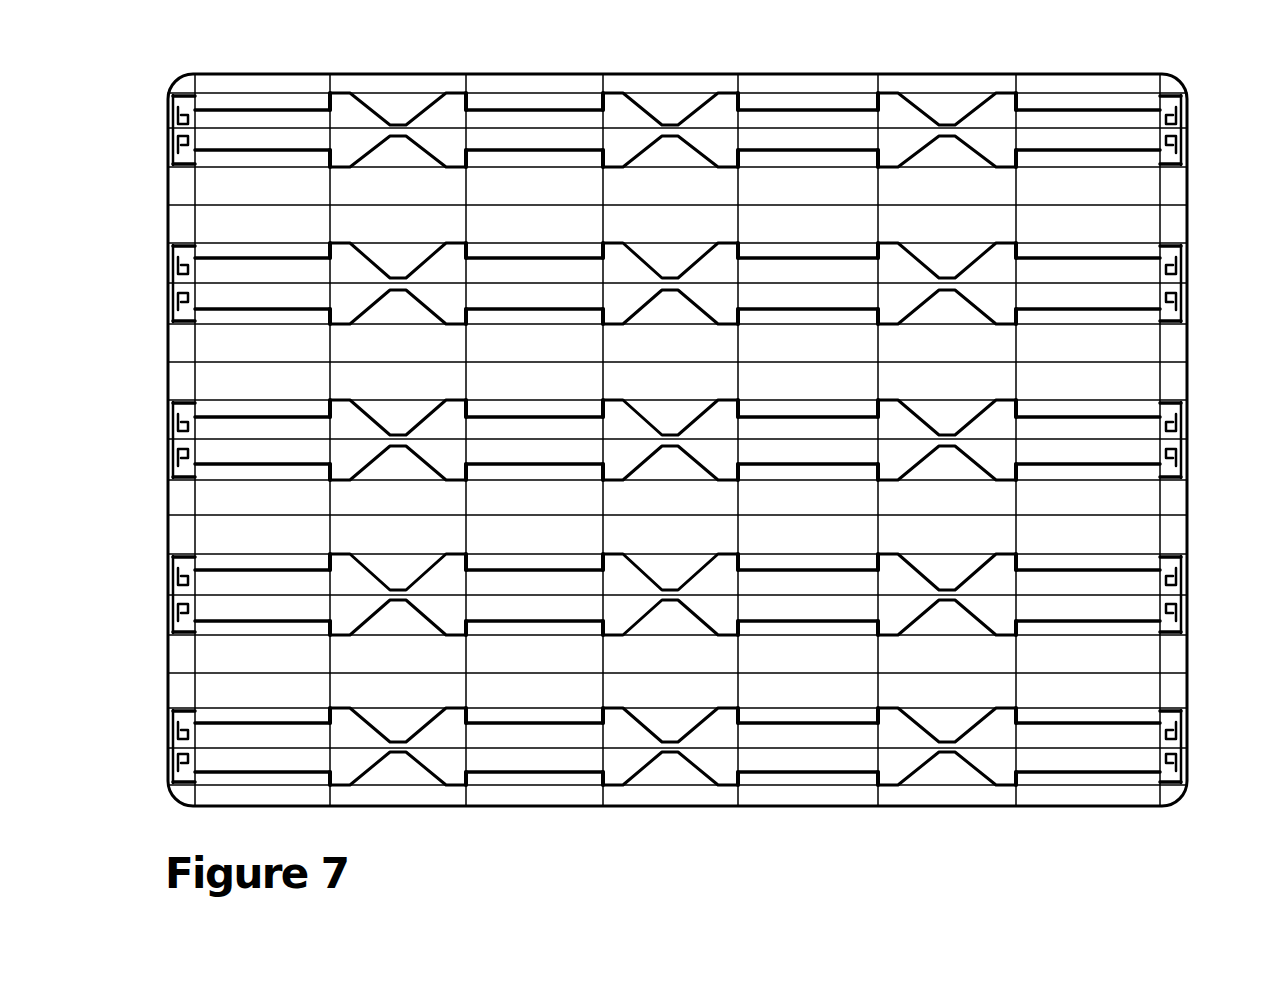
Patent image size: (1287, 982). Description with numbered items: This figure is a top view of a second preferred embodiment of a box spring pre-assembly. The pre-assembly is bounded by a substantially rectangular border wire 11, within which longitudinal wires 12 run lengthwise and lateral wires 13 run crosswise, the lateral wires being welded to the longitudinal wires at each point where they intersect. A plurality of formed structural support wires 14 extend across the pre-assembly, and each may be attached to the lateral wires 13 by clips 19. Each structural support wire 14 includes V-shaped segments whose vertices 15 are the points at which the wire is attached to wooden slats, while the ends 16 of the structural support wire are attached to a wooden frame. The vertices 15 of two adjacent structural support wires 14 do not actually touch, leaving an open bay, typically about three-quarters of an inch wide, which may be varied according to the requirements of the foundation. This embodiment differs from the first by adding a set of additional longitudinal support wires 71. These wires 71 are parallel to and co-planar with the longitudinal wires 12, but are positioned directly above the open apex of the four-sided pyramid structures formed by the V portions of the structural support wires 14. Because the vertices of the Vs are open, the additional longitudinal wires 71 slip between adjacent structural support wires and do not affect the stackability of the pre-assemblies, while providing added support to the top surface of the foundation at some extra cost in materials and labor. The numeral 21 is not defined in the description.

The border wire 11 is at (1182, 698).
The longitudinal wires 12 is at (508, 93).
The lateral wires 13 is at (328, 117).
The structural support wire 14 is at (1080, 773).
The vertices 15 is at (670, 752).
The ends 16 is at (1181, 567).
The clips 19 is at (603, 99).
The upper slat 21 is at (813, 110).
The additional longitudinal support wires 71 is at (670, 126).